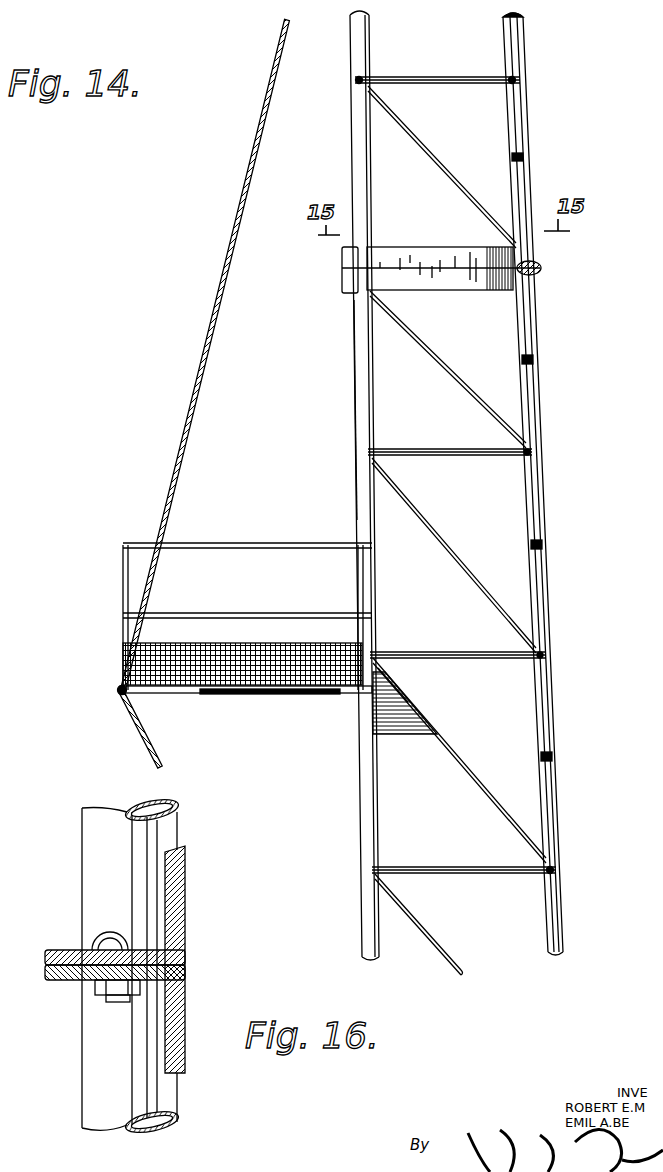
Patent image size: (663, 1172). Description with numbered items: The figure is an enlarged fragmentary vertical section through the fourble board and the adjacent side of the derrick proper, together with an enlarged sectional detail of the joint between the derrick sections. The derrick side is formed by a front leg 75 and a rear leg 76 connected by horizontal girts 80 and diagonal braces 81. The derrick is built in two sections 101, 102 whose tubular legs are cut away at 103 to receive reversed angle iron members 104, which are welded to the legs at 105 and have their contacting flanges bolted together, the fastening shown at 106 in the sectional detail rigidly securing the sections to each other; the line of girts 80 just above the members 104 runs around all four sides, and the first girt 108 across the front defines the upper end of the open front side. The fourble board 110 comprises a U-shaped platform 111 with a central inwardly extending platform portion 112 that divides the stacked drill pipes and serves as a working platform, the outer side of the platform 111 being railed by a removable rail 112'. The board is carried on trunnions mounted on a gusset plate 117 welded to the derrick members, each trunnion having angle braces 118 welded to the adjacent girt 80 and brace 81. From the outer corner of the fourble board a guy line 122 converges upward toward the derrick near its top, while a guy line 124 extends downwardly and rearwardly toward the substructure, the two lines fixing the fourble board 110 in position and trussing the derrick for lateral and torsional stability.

In FIG. 14, the front legs 75 is at (354, 433).
In FIG. 14, the rear legs 76 is at (538, 419).
In FIG. 14, the girts 80 is at (436, 78).
In FIG. 14, the braces 81 is at (448, 167).
In FIG. 14, the derrick section 101 is at (352, 184).
In FIG. 14, the derrick section 102 is at (353, 339).
In FIG. 16, the cut-away portion 103 is at (165, 866).
In FIG. 14, the angle iron members 104 is at (450, 247).
In FIG. 16, the angle iron members 104 is at (185, 906).
In FIG. 16, the weld 105 is at (162, 909).
In FIG. 16, the nut 106 is at (107, 1002).
In FIG. 14, the first front girt 108 is at (357, 83).
In FIG. 14, the fourble board 110 is at (172, 695).
In FIG. 14, the U-shaped platform 111 is at (143, 698).
In FIG. 14, the platform portion 112 is at (246, 711).
In FIG. 14, the rail 112' is at (247, 598).
In FIG. 14, the gusset plate 117 is at (404, 738).
In FIG. 14, the angle braces 118 is at (392, 668).
In FIG. 14, the guy lines 122 is at (210, 327).
In FIG. 14, the guy lines 124 is at (150, 749).